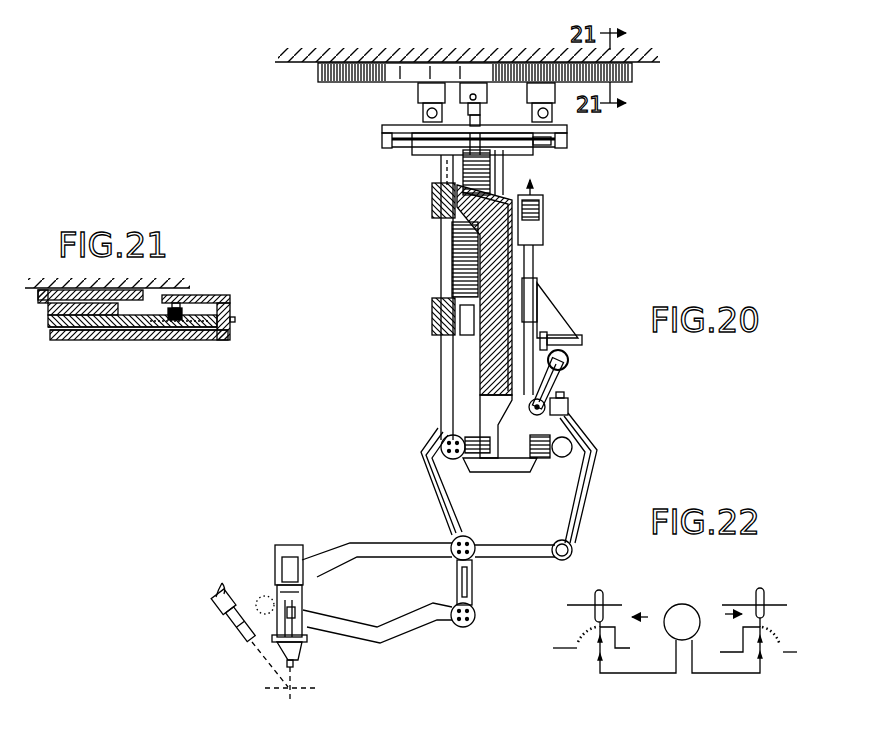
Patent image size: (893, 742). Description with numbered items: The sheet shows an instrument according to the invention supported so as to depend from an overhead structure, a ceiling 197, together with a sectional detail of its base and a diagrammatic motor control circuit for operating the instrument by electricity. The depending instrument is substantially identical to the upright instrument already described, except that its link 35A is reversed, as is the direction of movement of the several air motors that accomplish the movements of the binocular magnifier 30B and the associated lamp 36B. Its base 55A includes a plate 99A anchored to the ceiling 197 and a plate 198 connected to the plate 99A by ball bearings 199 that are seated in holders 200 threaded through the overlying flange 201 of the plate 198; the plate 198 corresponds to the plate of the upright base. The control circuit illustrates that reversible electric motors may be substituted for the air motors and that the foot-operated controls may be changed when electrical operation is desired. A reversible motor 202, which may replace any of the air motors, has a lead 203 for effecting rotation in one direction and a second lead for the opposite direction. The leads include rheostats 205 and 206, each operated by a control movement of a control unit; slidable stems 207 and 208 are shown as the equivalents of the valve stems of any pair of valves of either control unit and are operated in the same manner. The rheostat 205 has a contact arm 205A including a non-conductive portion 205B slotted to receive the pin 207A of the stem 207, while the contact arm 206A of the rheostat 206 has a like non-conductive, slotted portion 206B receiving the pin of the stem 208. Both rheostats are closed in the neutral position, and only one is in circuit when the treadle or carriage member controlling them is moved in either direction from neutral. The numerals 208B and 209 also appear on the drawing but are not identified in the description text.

In FIG. 20, the ceiling 197 is at (291, 63).
In FIG. 21, the ceiling 197 is at (42, 288).
In FIG. 20, the base 55A is at (339, 86).
In FIG. 21, the base 55A is at (82, 344).
In FIG. 20, the link 35A is at (307, 605).
In FIG. 20, the binocular magnifier 30B is at (305, 652).
In FIG. 20, the lamp 36B is at (226, 619).
In FIG. 21, the plate 99A is at (147, 317).
In FIG. 21, the holders 200 is at (182, 314).
In FIG. 21, the overlying flange 201 is at (230, 305).
In FIG. 21, the plate 198 is at (140, 342).
In FIG. 21, the ball bearings 199 is at (178, 327).
In FIG. 22, the reversible motor 202 is at (685, 604).
In FIG. 22, the lead 203 is at (648, 673).
In FIG. 22, the rheostat 205 is at (588, 648).
In FIG. 22, the contact arm 205A is at (603, 640).
In FIG. 22, the non-conductive portion 205B is at (599, 590).
In FIG. 22, the rheostat 206 is at (767, 647).
In FIG. 22, the contact arm 206A is at (760, 673).
In FIG. 22, the non-conductive, slotted portion 206B is at (765, 596).
In FIG. 22, the slidable stem 207 is at (607, 603).
In FIG. 22, the pin 207A is at (596, 603).
In FIG. 22, the slidable stem 208 is at (737, 607).
In FIG. 22, the port 208B is at (770, 600).
In FIG. 22, the conduit 209 is at (733, 673).